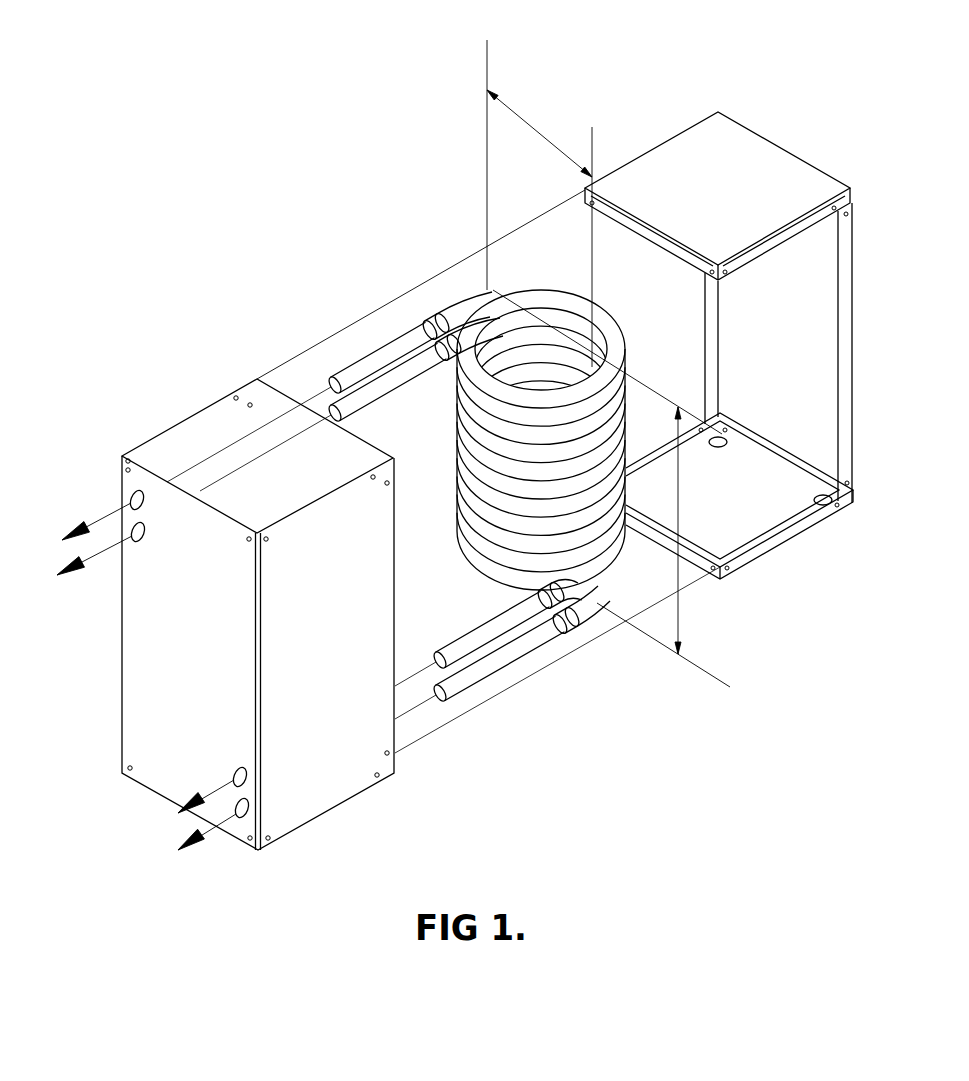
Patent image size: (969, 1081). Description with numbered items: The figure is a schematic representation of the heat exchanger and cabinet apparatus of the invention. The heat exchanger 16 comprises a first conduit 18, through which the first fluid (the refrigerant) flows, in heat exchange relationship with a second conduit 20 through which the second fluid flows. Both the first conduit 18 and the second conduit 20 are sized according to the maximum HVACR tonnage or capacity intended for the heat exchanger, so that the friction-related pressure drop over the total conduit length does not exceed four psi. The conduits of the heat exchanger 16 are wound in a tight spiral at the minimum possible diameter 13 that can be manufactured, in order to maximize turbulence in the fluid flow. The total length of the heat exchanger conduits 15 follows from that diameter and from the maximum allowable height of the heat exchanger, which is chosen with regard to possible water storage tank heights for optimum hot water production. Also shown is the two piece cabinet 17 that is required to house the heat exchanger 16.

The minimum possible diameter 13 is at (424, 209).
The total length of the heat exchanger conduits 15 is at (611, 488).
The heat exchanger 16 is at (541, 440).
The two piece cabinet 17 is at (455, 481).
The first conduit 18 is at (443, 570).
The second conduit 20 is at (468, 497).